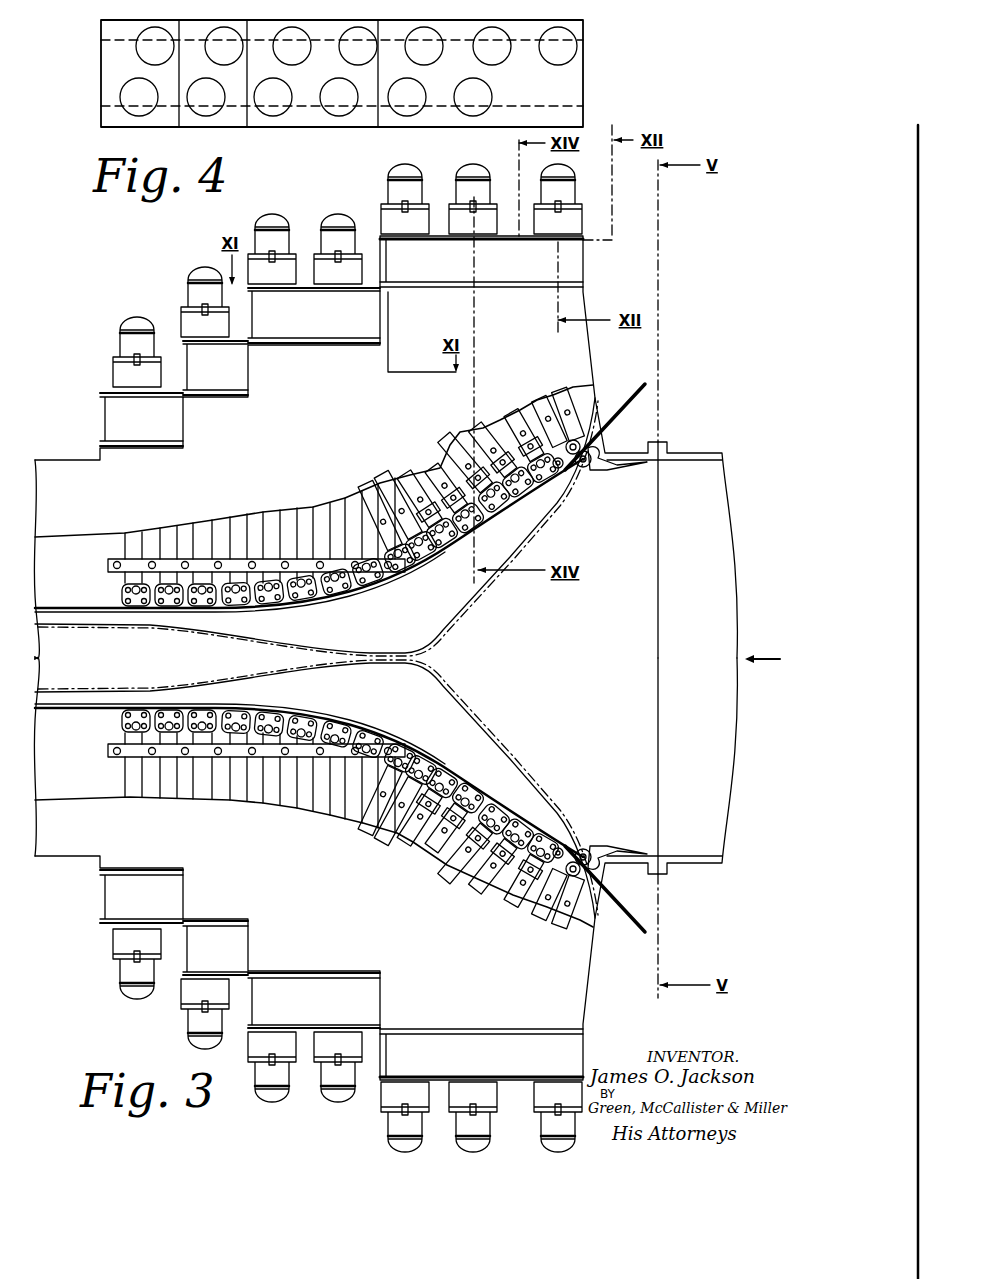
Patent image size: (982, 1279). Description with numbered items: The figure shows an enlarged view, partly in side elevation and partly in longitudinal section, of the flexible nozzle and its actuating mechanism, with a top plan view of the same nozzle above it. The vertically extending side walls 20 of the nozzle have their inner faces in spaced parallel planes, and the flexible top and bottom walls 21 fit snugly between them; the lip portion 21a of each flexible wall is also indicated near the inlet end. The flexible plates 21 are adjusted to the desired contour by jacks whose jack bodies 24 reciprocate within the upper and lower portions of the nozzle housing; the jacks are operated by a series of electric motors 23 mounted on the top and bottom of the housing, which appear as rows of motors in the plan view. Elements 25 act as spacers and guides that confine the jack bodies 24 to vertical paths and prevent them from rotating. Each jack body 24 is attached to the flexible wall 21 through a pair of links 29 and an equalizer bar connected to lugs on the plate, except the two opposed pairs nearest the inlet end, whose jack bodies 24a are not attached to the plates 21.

In FIG. 3, the side wall 20 is at (385, 658).
In FIG. 3, the flexible wall 21 is at (348, 722).
In FIG. 3, the channel lip 21a is at (497, 712).
In FIG. 4, the electric motor 23 is at (339, 112).
In FIG. 3, the electric motor 23 is at (130, 998).
In FIG. 3, the jack body 24 is at (438, 852).
In FIG. 3, the jack body 24a is at (540, 905).
In FIG. 3, the spacer and guide element 25 is at (222, 760).
In FIG. 3, the link 29 is at (433, 765).